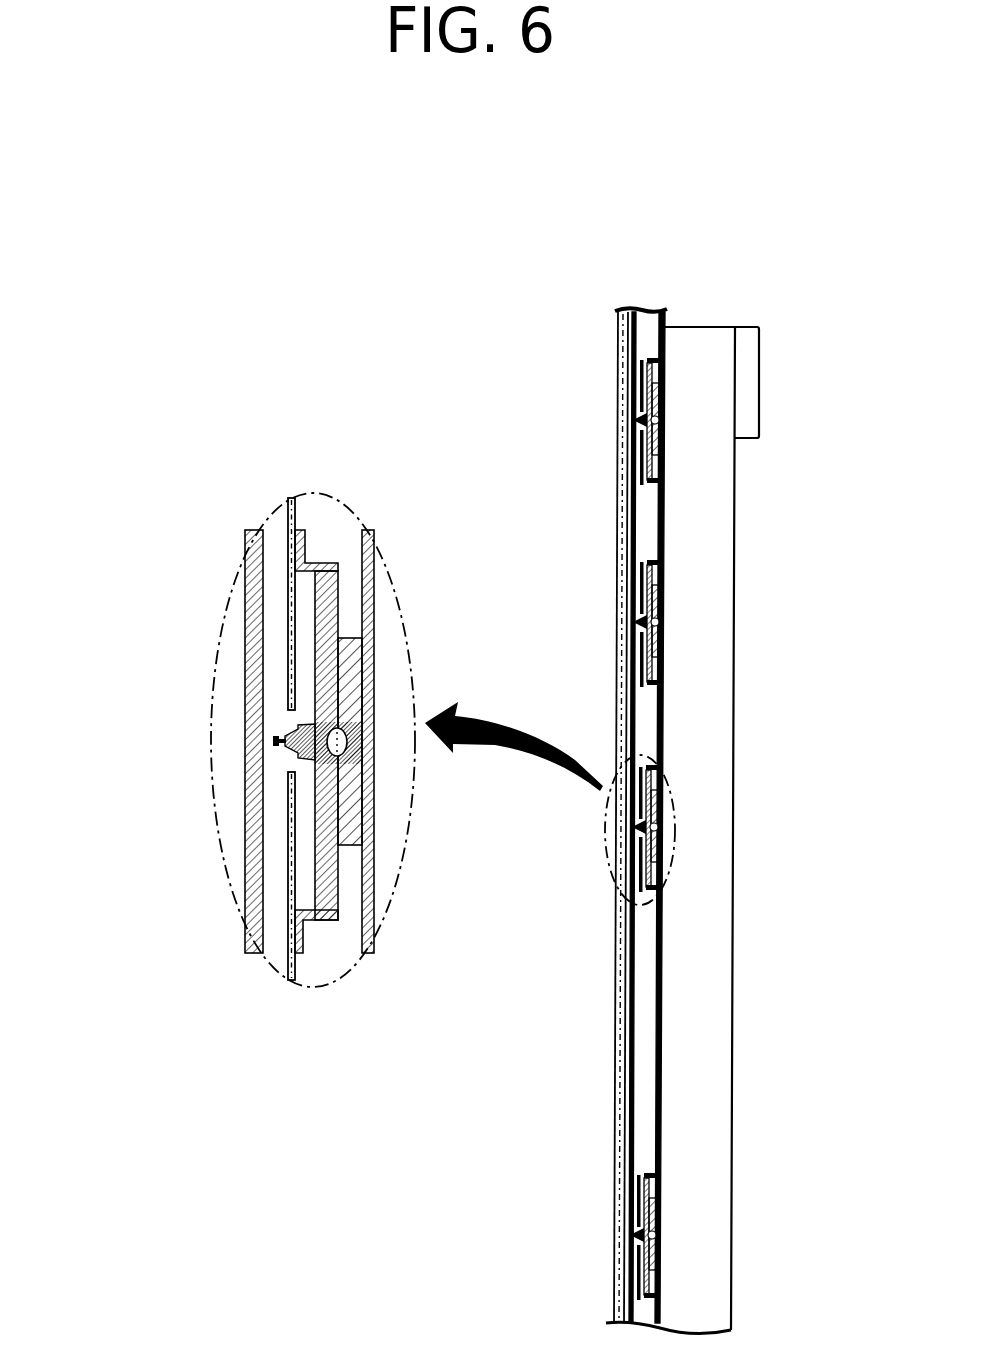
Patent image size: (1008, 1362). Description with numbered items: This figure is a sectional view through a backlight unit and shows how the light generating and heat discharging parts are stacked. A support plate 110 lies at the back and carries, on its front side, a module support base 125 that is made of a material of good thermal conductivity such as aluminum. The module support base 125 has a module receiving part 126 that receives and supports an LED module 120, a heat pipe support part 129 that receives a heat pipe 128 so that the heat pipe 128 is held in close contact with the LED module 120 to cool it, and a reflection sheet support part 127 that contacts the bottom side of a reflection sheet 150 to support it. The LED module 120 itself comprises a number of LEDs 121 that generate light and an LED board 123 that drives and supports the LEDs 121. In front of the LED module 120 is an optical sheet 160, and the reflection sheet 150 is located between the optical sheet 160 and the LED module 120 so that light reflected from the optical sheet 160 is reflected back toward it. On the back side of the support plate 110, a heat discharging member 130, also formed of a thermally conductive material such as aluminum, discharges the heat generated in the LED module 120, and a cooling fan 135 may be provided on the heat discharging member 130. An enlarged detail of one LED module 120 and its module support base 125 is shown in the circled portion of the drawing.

The support plate 110 is at (375, 877).
The LED module 120 is at (187, 686).
The LED 121 is at (272, 741).
The LED board 123 is at (308, 631).
The module support base 125 is at (432, 737).
The module receiving part 126 is at (332, 602).
The reflection sheet support part 127 is at (300, 530).
The heat pipe 128 is at (373, 757).
The heat pipe support part 129 is at (420, 741).
The heat discharging member 130 is at (735, 550).
The cooling fan 135 is at (760, 378).
The reflection sheet 150 is at (287, 890).
The optical sheet 160 is at (244, 821).